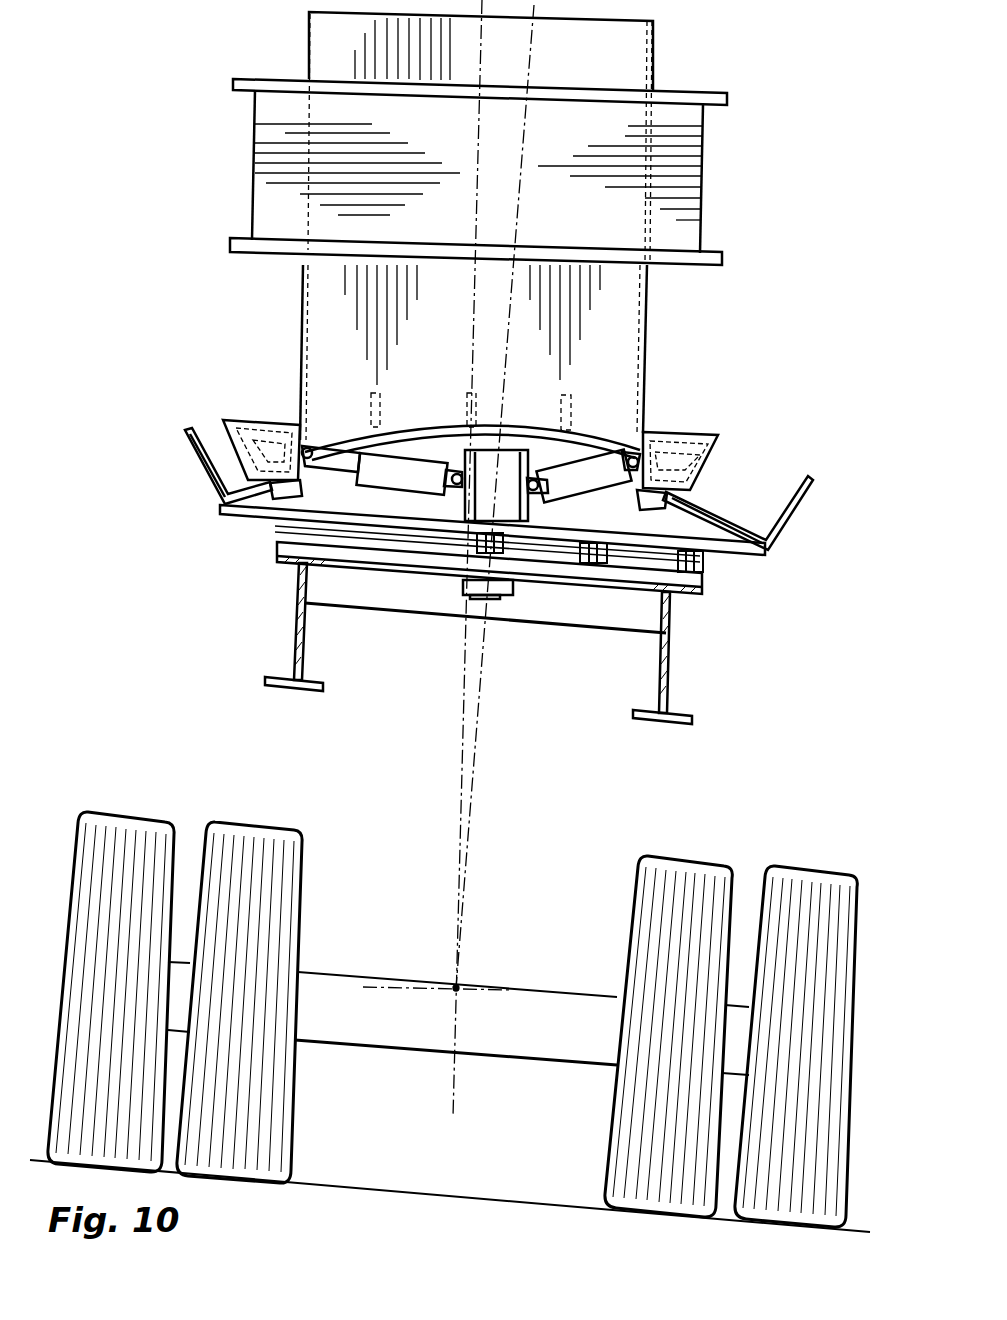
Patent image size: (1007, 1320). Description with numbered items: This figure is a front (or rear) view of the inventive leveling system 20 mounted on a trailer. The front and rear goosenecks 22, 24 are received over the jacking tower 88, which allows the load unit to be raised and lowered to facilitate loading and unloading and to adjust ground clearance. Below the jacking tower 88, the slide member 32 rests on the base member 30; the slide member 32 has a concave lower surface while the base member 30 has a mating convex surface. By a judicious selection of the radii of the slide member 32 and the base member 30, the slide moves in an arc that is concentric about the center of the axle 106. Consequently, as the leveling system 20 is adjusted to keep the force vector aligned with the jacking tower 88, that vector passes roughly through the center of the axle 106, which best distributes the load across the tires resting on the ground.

The front gooseneck 22 is at (703, 172).
The rear gooseneck 24 is at (776, 147).
The jacking tower 88 is at (650, 337).
The slide member 32 is at (268, 432).
The leveling system 20 is at (712, 491).
The base member 30 is at (245, 512).
The axle 106 is at (458, 986).